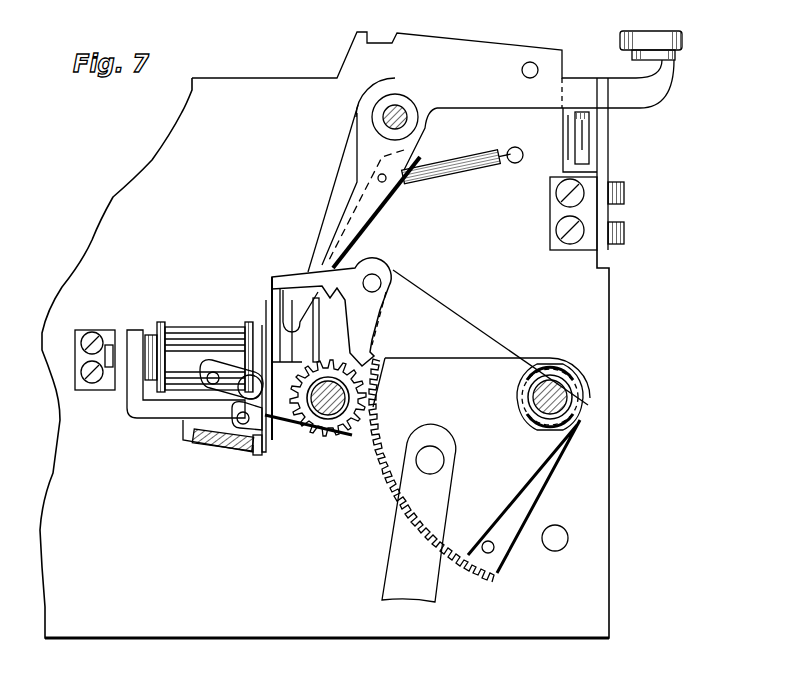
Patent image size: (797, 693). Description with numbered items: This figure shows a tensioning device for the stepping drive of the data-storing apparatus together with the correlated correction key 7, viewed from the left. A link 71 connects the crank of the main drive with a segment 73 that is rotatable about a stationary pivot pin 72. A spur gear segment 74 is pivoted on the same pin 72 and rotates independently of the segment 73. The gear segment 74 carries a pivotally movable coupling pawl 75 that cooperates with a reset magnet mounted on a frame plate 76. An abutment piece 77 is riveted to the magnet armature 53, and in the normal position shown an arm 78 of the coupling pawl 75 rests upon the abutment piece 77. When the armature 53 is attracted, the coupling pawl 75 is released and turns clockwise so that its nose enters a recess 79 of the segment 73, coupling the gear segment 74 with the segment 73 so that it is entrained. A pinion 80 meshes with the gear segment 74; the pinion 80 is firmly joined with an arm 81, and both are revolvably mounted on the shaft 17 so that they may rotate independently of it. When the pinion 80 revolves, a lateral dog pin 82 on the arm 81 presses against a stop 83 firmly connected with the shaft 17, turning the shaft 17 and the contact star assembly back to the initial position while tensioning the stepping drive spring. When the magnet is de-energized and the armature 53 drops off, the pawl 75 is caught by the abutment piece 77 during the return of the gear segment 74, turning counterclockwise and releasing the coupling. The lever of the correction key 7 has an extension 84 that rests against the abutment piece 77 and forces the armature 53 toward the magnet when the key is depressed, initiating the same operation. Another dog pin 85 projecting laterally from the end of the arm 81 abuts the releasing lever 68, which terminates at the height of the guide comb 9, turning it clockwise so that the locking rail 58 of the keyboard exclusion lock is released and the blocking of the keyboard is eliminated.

The correction key 7 is at (647, 82).
The guide comb 9 is at (602, 158).
The shaft 17 is at (337, 422).
The magnet armature 53 is at (265, 330).
The locking rail 58 is at (577, 133).
The releasing lever 68 is at (350, 178).
The link 71 is at (400, 563).
The stationary pivot pin 72 is at (580, 405).
The segment 73 is at (523, 468).
The spur gear segment 74 is at (440, 310).
The coupling pawl 75 is at (350, 268).
The frame plate 76 is at (274, 95).
The abutment piece 77 is at (273, 298).
The arm of coupling pawl 78 is at (277, 278).
The recess 79 is at (382, 407).
The pinion 80 is at (329, 440).
The arm 81 is at (283, 410).
The lateral dog pin 82 is at (245, 393).
The stop 83 is at (305, 348).
The extension 84 is at (285, 318).
The dog pin 85 is at (207, 380).